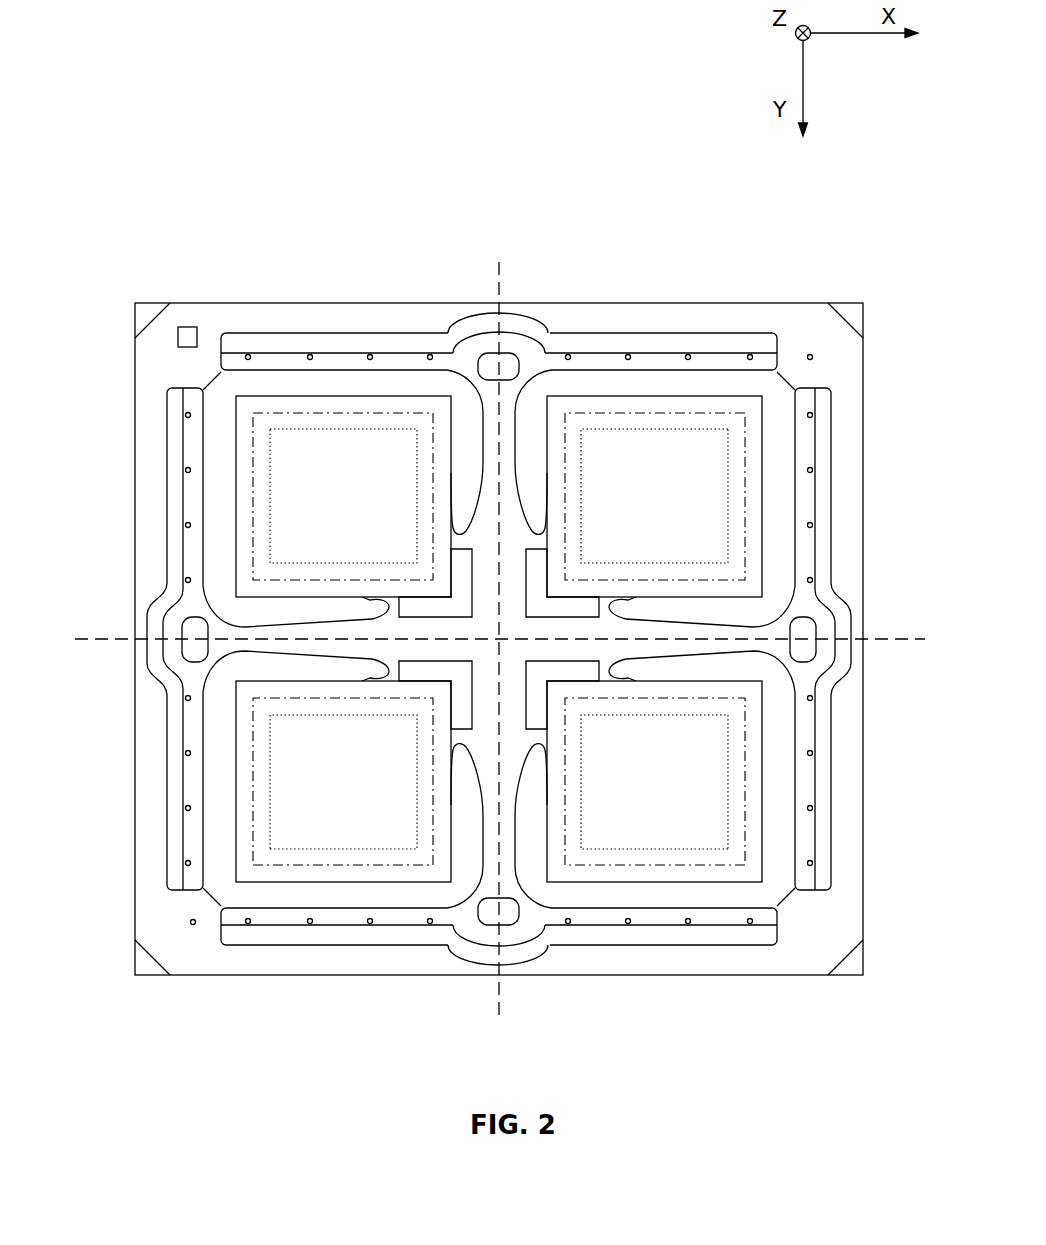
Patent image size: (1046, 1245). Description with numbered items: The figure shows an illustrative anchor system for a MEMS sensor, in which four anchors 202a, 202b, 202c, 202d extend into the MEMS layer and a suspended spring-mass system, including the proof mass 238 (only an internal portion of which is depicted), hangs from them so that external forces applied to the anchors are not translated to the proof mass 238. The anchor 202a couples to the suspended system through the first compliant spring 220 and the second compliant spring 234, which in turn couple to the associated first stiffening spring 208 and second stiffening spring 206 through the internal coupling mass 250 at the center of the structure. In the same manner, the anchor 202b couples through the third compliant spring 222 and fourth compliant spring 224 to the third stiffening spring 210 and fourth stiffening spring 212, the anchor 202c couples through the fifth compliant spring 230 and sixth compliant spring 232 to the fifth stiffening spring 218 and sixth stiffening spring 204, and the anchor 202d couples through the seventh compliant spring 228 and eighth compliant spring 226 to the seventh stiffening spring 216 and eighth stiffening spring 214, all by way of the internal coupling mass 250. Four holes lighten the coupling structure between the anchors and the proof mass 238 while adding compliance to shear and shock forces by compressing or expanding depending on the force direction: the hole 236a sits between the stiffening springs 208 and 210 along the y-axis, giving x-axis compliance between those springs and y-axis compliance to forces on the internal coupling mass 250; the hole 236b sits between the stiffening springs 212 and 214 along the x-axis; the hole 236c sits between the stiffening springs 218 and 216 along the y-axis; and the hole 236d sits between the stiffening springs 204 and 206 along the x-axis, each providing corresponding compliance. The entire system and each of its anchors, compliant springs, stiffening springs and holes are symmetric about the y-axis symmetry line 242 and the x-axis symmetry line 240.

The anchor 202a is at (390, 511).
The anchor 202b is at (701, 511).
The anchor 202c is at (390, 795).
The anchor 202d is at (703, 795).
The sixth stiffening spring 204 is at (192, 792).
The second stiffening spring 206 is at (193, 498).
The first stiffening spring 208 is at (333, 360).
The third stiffening spring 210 is at (668, 360).
The fourth stiffening spring 212 is at (805, 498).
The eighth stiffening spring 214 is at (805, 792).
The seventh stiffening spring 216 is at (662, 917).
The fifth stiffening spring 218 is at (334, 917).
The first compliant spring 220 is at (460, 532).
The third compliant spring 222 is at (538, 532).
The fourth compliant spring 224 is at (610, 604).
The eighth compliant spring 226 is at (610, 674).
The seventh compliant spring 228 is at (538, 746).
The fifth compliant spring 230 is at (460, 746).
The sixth compliant spring 232 is at (388, 674).
The second compliant spring 234 is at (388, 604).
The hole 236a is at (510, 352).
The hole 236b is at (806, 630).
The hole 236c is at (510, 927).
The hole 236d is at (192, 630).
The proof mass 238 is at (188, 325).
The x-axis symmetry line 240 is at (82, 648).
The y-axis symmetry line 242 is at (496, 262).
The internal coupling mass 250 is at (523, 630).